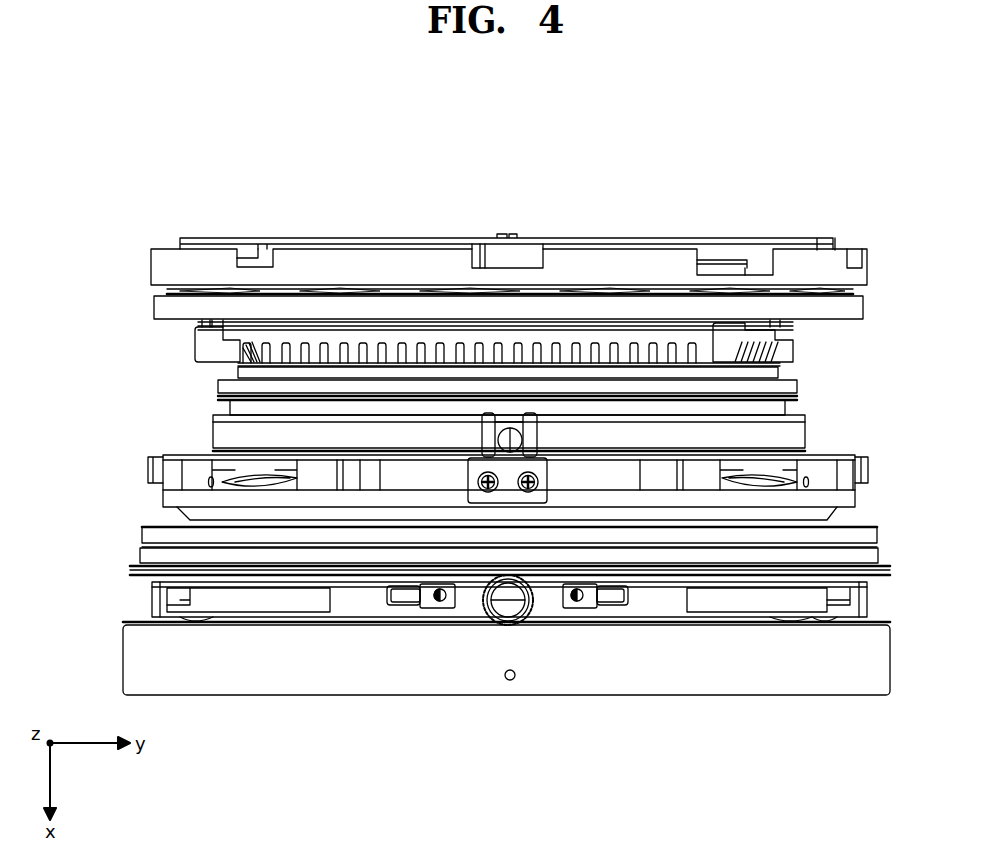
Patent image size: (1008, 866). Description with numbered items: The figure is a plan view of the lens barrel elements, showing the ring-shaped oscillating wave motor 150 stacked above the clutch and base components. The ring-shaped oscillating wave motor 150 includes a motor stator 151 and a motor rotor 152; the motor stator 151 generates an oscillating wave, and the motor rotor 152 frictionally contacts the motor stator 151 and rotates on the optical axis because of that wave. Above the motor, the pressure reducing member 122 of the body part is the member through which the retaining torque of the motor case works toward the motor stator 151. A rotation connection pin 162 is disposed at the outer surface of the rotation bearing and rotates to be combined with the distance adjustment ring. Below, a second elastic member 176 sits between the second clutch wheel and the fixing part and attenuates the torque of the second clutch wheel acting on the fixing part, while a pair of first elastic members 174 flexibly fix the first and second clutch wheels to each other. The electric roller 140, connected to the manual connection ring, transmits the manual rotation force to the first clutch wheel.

The pressure reducing member 122 is at (285, 285).
The second elastic member 176 is at (422, 467).
The rotation connection pin 162 is at (508, 430).
The motor rotor 152 is at (598, 390).
The motor stator 151 is at (648, 337).
The ring-shaped oscillating wave motor 150 is at (507, 254).
The first elastic members 174 is at (428, 603).
The electric roller 140 is at (505, 602).